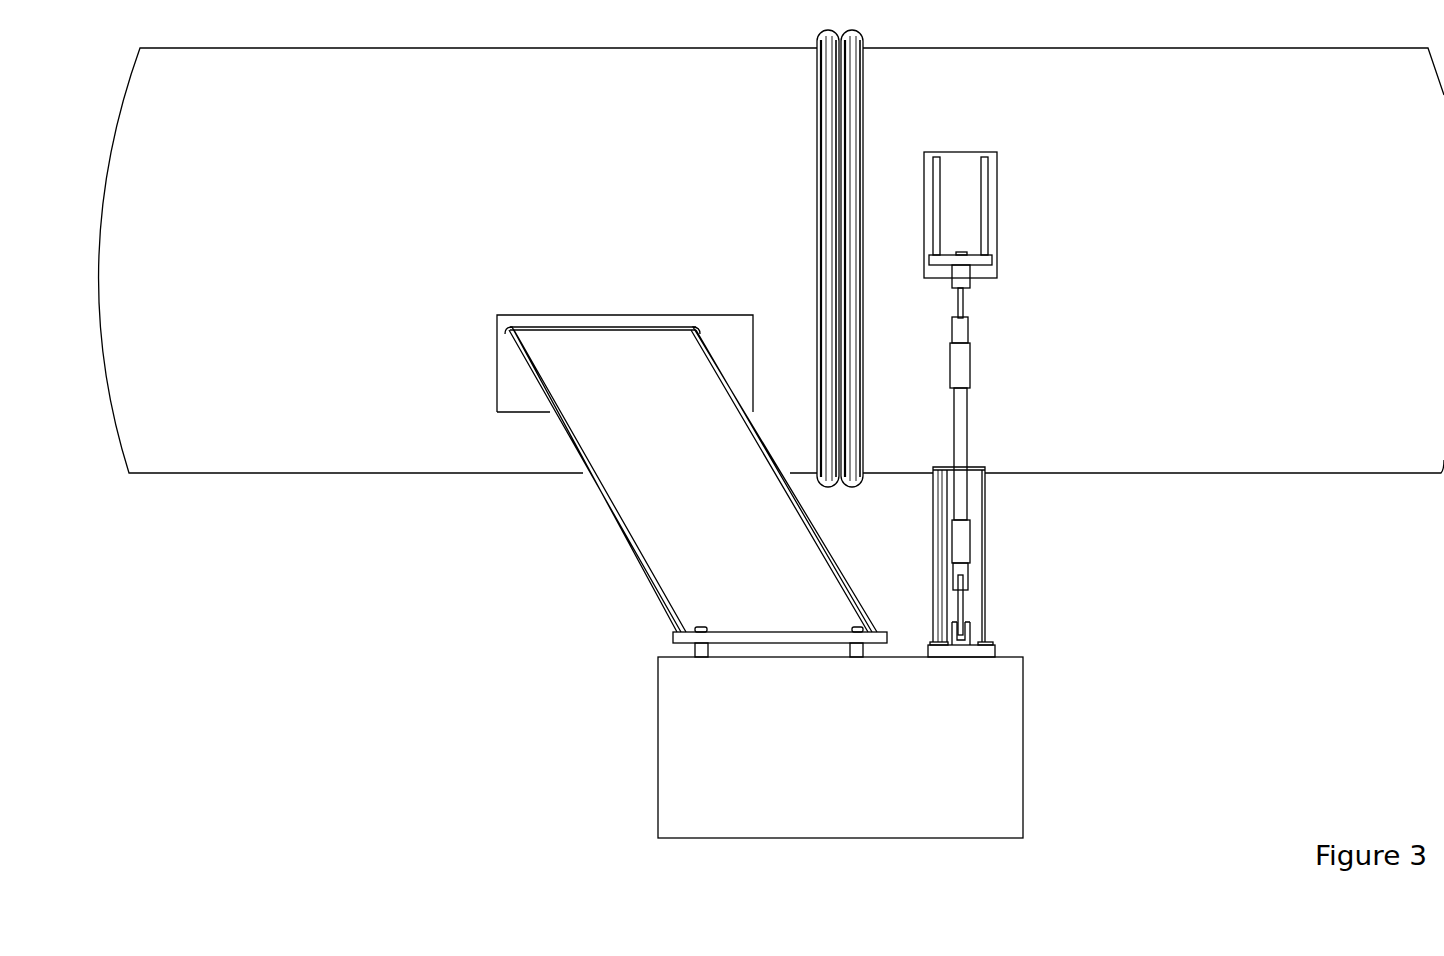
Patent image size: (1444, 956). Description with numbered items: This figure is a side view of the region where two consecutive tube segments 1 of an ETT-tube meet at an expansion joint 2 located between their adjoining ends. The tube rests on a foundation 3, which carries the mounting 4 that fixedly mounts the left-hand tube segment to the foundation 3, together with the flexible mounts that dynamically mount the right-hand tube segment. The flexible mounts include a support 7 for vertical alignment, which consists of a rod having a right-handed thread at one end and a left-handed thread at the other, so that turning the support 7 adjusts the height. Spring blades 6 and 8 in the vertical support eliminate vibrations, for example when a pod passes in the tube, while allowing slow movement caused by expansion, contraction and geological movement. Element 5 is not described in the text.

The tube segment 1 is at (475, 472).
The expansion joint 2 is at (858, 372).
The foundation 3 is at (658, 768).
The mounting 4 is at (615, 523).
The platform support 5 is at (693, 647).
The spring blade 6 is at (963, 303).
The support 7 is at (968, 490).
The spring blade 8 is at (967, 607).